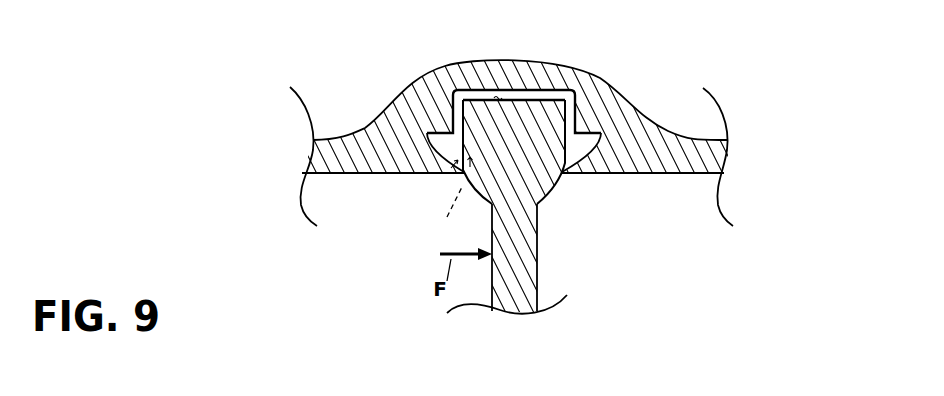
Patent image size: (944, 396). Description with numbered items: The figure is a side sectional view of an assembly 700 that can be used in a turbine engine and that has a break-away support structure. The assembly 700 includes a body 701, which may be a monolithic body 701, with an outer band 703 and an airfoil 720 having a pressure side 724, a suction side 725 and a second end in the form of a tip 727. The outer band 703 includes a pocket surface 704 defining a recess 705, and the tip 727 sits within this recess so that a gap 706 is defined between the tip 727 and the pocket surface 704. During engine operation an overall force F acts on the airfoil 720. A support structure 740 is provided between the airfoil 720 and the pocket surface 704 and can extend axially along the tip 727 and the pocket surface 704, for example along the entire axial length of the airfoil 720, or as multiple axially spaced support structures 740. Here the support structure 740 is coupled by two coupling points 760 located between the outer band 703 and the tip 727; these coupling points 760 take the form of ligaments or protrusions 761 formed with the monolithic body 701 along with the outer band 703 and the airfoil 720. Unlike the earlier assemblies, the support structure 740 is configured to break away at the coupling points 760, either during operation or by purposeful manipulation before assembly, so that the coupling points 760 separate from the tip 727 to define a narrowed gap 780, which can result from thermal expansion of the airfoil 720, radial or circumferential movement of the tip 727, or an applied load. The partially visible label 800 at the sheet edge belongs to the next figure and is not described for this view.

The assembly 700 is at (740, 75).
The body 701 is at (657, 116).
The outer band 703 is at (388, 125).
The pocket surface 704 is at (473, 89).
The recess 705 is at (560, 88).
The gap 706 is at (501, 94).
The airfoil 720 is at (512, 326).
The pressure side 724 is at (490, 287).
The suction side 725 is at (538, 275).
The tip 727 is at (517, 163).
The support structure 740 is at (438, 174).
The coupling point 760 is at (563, 177).
The protrusions 761 is at (597, 188).
The narrowed gap 780 is at (445, 202).
The system 800 is at (802, 390).